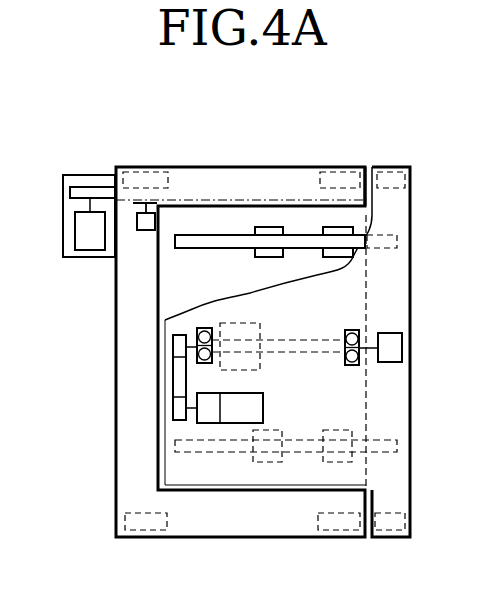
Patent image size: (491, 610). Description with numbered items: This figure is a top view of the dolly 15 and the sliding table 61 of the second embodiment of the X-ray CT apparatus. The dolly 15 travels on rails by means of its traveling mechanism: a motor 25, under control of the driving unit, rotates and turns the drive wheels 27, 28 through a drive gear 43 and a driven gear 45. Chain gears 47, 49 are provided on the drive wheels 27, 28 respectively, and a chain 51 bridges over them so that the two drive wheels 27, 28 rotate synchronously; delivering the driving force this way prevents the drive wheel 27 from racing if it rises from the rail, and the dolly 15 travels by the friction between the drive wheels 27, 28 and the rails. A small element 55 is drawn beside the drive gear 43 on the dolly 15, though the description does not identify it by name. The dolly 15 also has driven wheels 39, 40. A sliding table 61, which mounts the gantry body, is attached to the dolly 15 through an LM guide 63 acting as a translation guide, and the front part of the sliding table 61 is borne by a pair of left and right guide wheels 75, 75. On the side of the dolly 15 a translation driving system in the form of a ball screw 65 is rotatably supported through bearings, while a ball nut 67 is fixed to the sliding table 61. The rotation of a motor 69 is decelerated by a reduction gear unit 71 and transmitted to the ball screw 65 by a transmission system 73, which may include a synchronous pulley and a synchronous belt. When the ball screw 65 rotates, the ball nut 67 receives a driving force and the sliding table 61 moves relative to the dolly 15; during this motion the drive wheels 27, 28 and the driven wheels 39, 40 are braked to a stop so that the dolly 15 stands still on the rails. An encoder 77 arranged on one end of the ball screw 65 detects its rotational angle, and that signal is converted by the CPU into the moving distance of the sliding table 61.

The dolly 15 is at (203, 176).
The motor 25 is at (75, 232).
The drive wheel 27 is at (152, 170).
The drive wheel 28 is at (333, 170).
The driven wheel 39 is at (147, 535).
The driven wheel 40 is at (345, 535).
The drive gear 43 is at (75, 183).
The driven gear 45 is at (118, 165).
The chain gear 47 is at (133, 205).
The chain gear 49 is at (357, 197).
The chain 51 is at (245, 200).
The sensor 55 is at (147, 231).
The sliding table 61 is at (400, 217).
The LM guide 63 is at (299, 235).
The ball screw 65 is at (293, 340).
The ball nut 67 is at (270, 367).
The motor 69 is at (177, 443).
The reduction gear unit 71 is at (197, 421).
The transmission system 73 is at (173, 380).
The guide wheel 75 is at (405, 165).
The encoder 77 is at (402, 348).